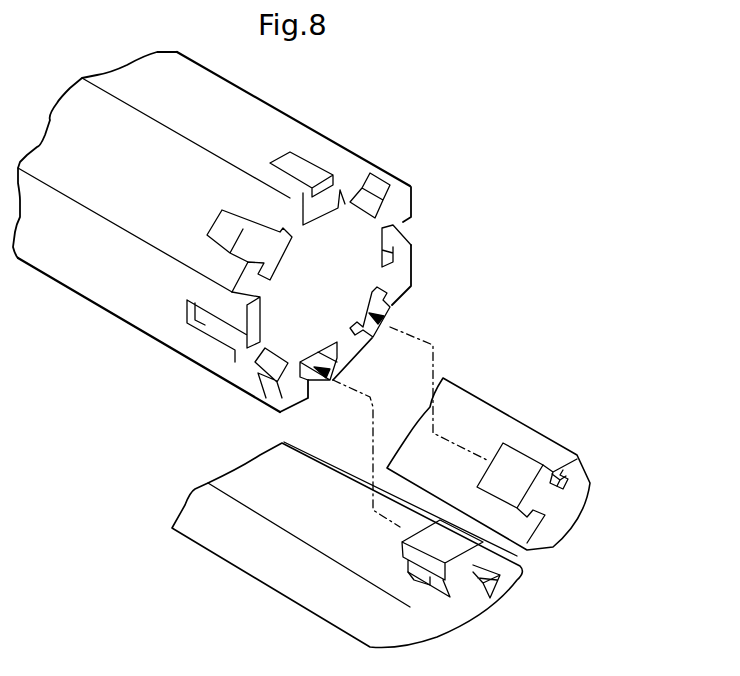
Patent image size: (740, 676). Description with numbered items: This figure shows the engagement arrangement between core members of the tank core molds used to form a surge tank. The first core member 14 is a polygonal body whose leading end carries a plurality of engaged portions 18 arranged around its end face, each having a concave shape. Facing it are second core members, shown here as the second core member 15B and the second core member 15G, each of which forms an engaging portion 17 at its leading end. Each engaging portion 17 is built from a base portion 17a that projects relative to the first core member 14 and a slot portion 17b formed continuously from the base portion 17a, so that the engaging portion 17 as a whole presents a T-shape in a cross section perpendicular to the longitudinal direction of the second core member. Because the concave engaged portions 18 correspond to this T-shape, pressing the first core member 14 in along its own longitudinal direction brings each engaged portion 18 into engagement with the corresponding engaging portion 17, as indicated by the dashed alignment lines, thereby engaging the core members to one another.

The first core member 14 is at (95, 287).
The engaged portion 18 is at (275, 160).
The second core member 15B is at (473, 402).
The second core member 15G is at (265, 560).
The engaging portion 17 is at (542, 461).
The base portion 17a is at (562, 481).
The slot portion 17b is at (520, 455).